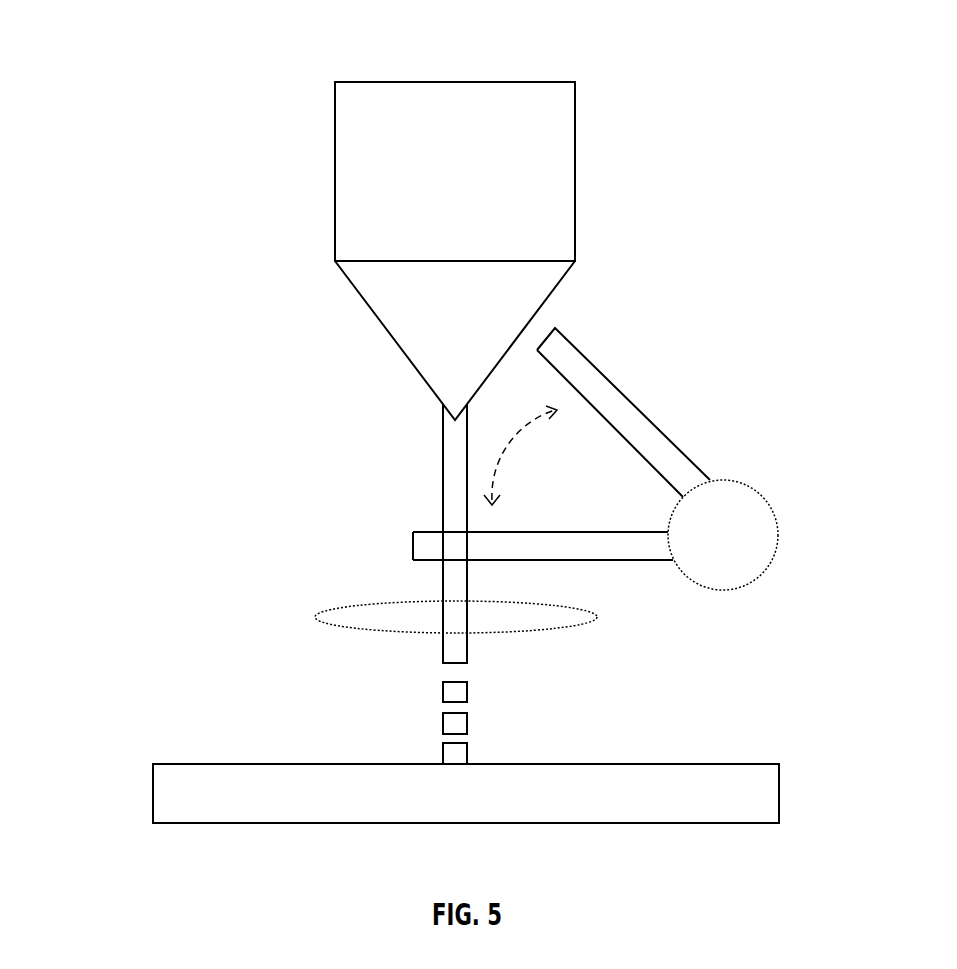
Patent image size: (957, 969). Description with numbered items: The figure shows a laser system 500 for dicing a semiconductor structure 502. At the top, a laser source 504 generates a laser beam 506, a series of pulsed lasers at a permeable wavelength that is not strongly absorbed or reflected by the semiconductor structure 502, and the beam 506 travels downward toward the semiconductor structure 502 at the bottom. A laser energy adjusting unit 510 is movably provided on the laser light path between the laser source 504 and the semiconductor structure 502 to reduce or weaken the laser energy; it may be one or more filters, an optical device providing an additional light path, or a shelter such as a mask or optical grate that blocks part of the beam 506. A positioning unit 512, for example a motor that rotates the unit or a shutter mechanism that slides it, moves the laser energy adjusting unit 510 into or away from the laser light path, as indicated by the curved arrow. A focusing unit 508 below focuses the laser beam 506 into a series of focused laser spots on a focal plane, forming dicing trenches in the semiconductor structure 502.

The laser system 500 is at (475, 26).
The semiconductor structure 502 is at (779, 793).
The laser source 504 is at (575, 172).
The laser beam 506 is at (443, 472).
The focusing unit 508 is at (312, 615).
The laser energy adjusting unit 510 is at (670, 440).
The positioning unit 512 is at (778, 535).